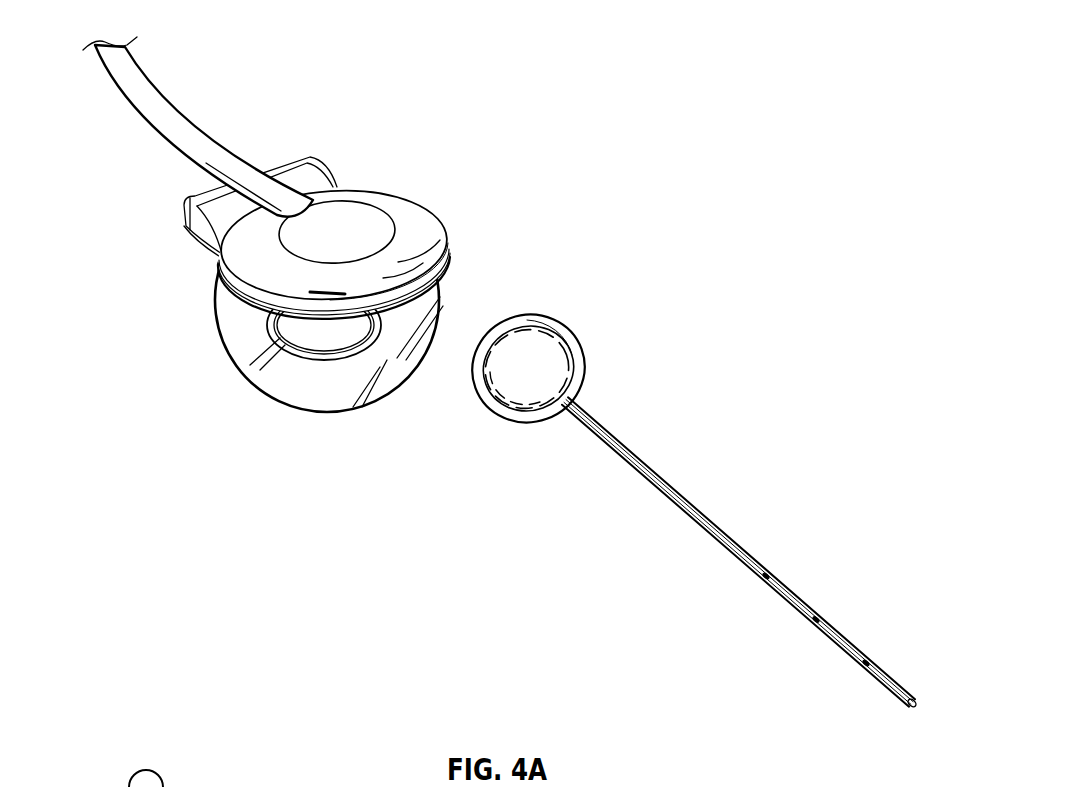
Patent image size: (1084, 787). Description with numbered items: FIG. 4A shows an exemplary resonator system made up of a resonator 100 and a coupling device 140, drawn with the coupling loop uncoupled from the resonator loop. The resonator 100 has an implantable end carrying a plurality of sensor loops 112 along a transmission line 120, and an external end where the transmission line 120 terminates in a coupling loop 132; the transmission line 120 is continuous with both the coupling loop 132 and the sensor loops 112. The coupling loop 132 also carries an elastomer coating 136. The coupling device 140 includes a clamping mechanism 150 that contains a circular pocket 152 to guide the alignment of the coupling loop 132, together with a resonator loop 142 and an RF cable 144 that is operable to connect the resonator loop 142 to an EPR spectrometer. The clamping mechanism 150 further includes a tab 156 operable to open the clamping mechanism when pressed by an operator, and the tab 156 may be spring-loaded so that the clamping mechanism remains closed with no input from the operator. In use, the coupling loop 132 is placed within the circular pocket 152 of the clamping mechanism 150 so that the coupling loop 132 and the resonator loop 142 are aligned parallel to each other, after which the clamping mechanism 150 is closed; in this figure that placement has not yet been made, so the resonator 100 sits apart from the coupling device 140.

The resonator 100 is at (700, 503).
The sensor loops 112 is at (766, 569).
The transmission line 120 is at (678, 493).
The coupling loop 132 is at (563, 360).
The elastomer coating 136 is at (519, 418).
The coupling device 140 is at (280, 224).
The resonator loop 142 is at (446, 247).
The RF cable 144 is at (166, 90).
The clamping mechanism 150 is at (395, 199).
The circular pocket 152 is at (317, 341).
The tab 156 is at (187, 224).